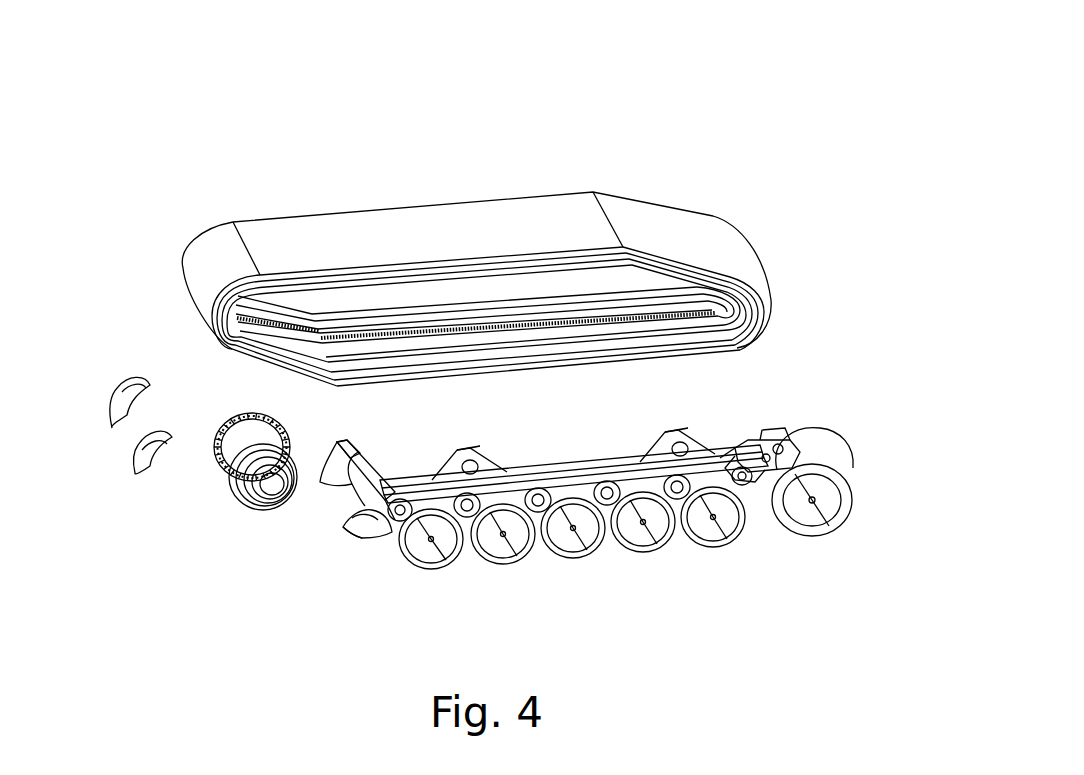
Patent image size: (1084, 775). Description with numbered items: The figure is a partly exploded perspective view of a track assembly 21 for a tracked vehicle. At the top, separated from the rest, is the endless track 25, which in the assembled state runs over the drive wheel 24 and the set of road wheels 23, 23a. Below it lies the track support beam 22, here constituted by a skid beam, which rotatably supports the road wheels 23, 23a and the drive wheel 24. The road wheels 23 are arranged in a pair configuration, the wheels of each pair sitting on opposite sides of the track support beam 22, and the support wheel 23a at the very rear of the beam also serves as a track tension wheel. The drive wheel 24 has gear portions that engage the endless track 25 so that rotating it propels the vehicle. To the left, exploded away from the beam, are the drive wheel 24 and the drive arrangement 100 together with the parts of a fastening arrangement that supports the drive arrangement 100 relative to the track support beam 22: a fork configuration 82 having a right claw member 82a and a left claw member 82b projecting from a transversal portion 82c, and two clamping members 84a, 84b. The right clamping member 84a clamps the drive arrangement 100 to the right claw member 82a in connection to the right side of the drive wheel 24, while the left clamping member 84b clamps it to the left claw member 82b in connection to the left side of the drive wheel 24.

The track assembly 21 is at (288, 94).
The endless track 25 is at (490, 207).
The track support beam 22 is at (546, 463).
The road wheels 23 is at (428, 571).
The tension wheel 23a is at (810, 541).
The drive wheel 24 is at (225, 487).
The drive arrangement 100 is at (271, 500).
The right clamping member 84a is at (115, 384).
The left clamping member 84b is at (157, 420).
The fork configuration 82 is at (369, 448).
The right claw member 82a is at (340, 431).
The left claw member 82b is at (364, 543).
The transversal portion 82c is at (350, 507).